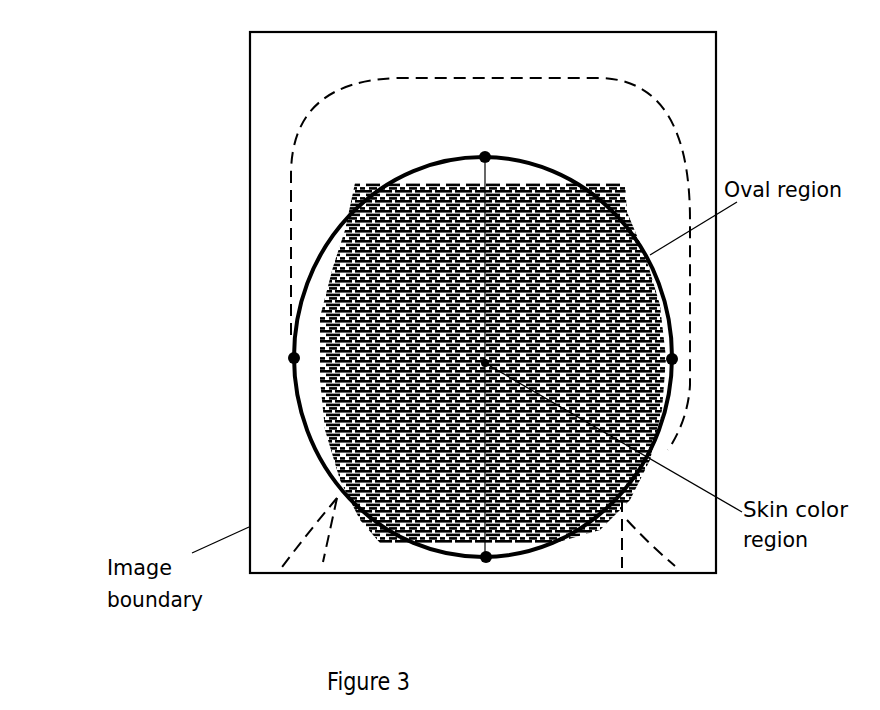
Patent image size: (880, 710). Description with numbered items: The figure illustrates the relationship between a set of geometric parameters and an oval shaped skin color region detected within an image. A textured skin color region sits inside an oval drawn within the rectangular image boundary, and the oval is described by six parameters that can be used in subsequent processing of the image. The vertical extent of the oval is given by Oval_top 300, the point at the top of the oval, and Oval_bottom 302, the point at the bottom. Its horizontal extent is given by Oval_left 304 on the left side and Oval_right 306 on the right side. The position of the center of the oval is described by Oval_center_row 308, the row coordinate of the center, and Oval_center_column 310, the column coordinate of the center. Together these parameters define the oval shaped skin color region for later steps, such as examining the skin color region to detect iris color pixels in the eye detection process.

The Oval_top 300 is at (485, 157).
The Oval_bottom 302 is at (517, 590).
The Oval_left 304 is at (294, 358).
The Oval_right 306 is at (672, 360).
The Oval_center_row 308 is at (485, 363).
The Oval_center_column 310 is at (248, 357).